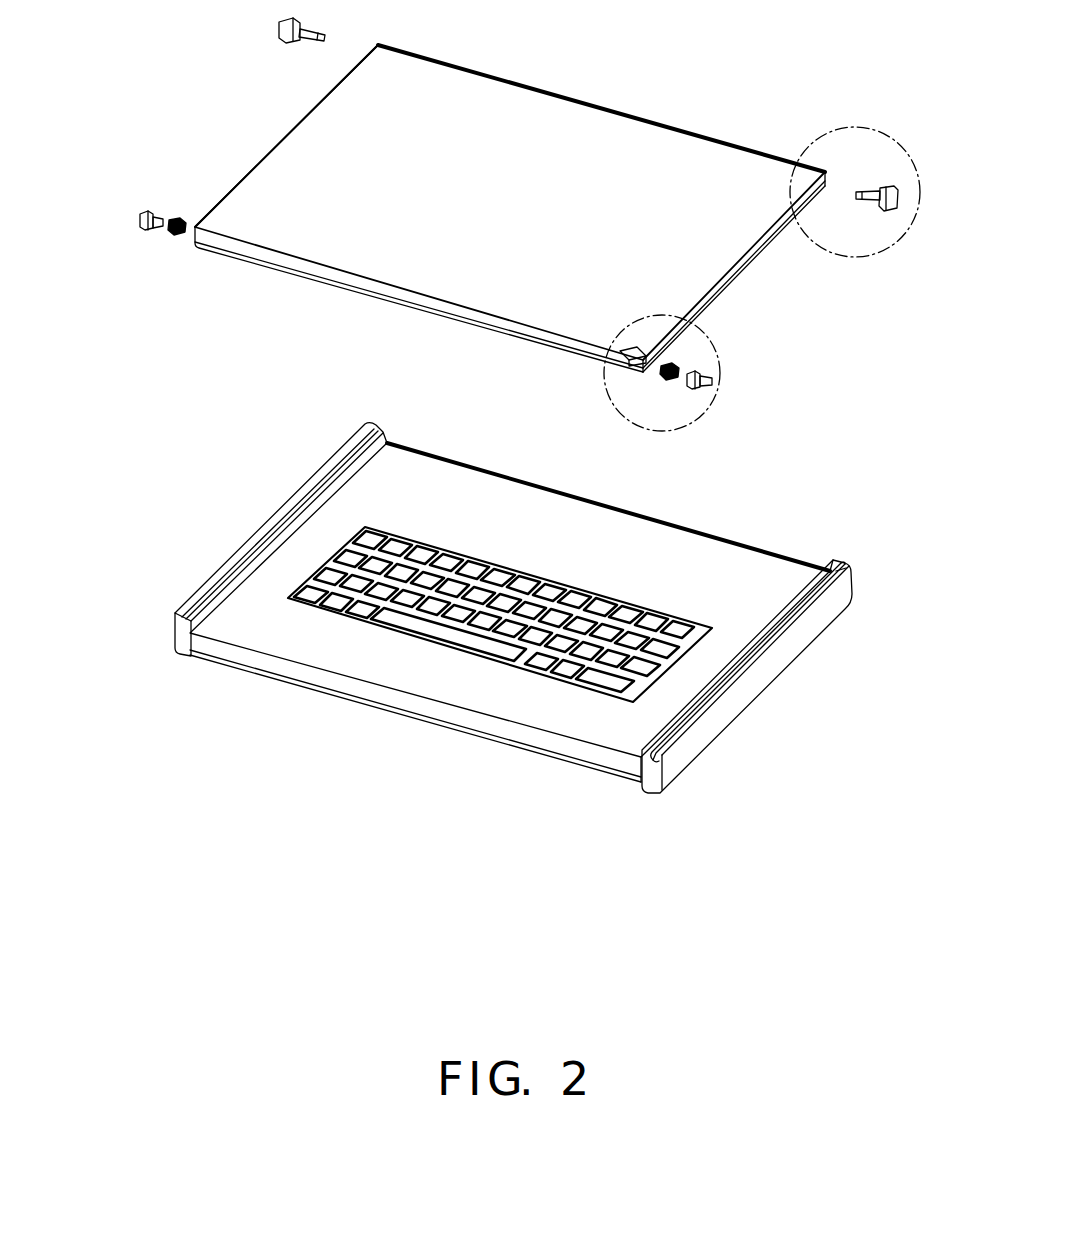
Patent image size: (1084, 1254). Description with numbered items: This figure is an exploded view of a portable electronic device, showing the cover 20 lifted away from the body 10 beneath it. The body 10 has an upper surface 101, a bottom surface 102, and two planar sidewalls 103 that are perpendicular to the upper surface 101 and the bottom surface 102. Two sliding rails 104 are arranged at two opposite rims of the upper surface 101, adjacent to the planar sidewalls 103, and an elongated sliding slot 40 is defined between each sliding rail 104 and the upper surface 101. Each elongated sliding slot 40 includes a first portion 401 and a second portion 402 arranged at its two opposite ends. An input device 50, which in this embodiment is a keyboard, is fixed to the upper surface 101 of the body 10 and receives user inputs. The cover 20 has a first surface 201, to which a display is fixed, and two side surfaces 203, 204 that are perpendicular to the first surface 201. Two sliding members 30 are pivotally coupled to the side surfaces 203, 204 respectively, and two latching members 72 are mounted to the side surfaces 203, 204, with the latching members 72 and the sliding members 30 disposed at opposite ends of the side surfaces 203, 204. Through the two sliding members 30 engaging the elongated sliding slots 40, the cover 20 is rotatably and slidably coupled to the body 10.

The body 10 is at (491, 659).
The upper surface 101 is at (563, 703).
The bottom surface 102 is at (398, 722).
The planar sidewalls 103 is at (168, 637).
The sliding rails 104 is at (277, 518).
The cover 20 is at (520, 240).
The first surface 201 is at (373, 297).
The side surface 203 is at (738, 272).
The side surface 204 is at (283, 136).
The sliding member 30 is at (888, 187).
The elongated sliding slot 40 is at (770, 667).
The first portion 401 is at (832, 587).
The second portion 402 is at (670, 752).
The input device 50 is at (327, 597).
The latching member 72 is at (697, 387).